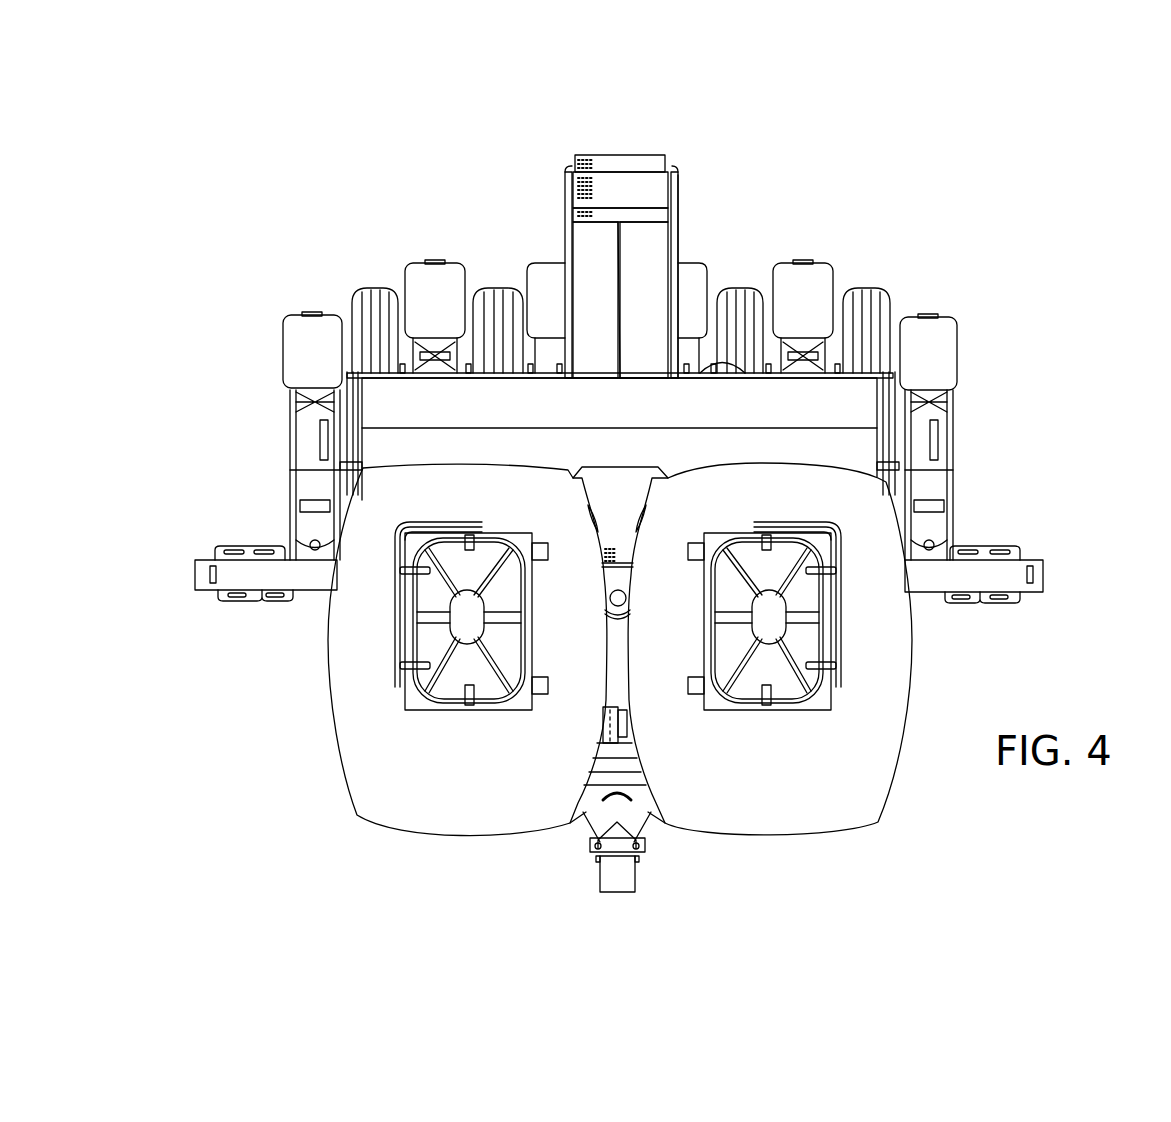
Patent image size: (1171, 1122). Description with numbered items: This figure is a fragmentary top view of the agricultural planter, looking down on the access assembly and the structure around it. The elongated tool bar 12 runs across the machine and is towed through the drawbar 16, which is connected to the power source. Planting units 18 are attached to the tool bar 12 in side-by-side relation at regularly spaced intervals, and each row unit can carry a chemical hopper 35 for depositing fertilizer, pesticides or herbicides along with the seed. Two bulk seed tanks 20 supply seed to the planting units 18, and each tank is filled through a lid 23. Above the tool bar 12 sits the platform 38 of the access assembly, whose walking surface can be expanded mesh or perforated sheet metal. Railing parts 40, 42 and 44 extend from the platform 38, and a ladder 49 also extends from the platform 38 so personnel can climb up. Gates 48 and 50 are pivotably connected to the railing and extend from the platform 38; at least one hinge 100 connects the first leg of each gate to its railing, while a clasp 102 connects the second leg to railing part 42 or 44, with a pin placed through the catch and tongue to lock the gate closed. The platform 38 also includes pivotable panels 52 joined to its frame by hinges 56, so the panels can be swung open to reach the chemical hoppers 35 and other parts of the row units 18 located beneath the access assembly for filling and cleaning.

The tool bar 12 is at (243, 575).
The drawbar 16 is at (618, 877).
The planting unit 18 is at (950, 475).
The bulk seed tank 20 is at (373, 765).
The lid 23 is at (430, 642).
The chemical hopper 35 is at (438, 282).
The platform 38 is at (820, 442).
The railing part 40 is at (362, 418).
The railing part 42 is at (683, 186).
The railing part 44 is at (585, 247).
The gate 48 is at (860, 365).
The ladder 49 is at (606, 158).
The gate 50 is at (385, 360).
The pivotable panel 52 is at (585, 247).
The hinge 56 is at (648, 246).
The hinge 100 is at (345, 368).
The clasp 102 is at (552, 340).